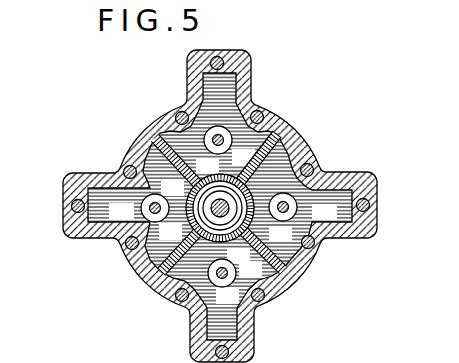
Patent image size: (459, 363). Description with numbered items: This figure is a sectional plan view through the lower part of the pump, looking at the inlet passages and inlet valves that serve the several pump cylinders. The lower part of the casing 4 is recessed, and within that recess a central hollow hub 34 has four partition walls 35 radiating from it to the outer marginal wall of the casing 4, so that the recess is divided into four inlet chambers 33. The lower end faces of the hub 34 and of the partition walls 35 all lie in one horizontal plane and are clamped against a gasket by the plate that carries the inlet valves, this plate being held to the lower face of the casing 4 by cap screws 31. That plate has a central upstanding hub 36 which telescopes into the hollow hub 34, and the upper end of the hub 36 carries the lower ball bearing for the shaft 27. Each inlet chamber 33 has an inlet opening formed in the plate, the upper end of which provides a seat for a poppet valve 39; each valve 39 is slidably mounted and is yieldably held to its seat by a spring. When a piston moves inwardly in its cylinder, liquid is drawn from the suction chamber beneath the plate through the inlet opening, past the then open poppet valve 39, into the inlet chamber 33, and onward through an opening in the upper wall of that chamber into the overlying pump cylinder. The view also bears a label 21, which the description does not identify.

The casing 4 is at (147, 293).
The shaft 21 is at (64, 0).
The shaft 27 is at (217, 205).
The cap screws 31 is at (263, 110).
The inlet chambers 33 is at (150, 160).
The central hollow hub 34 is at (258, 225).
The partition walls 35 is at (233, 172).
The central upstanding hub 36 is at (222, 242).
The poppet valve 39 is at (226, 148).